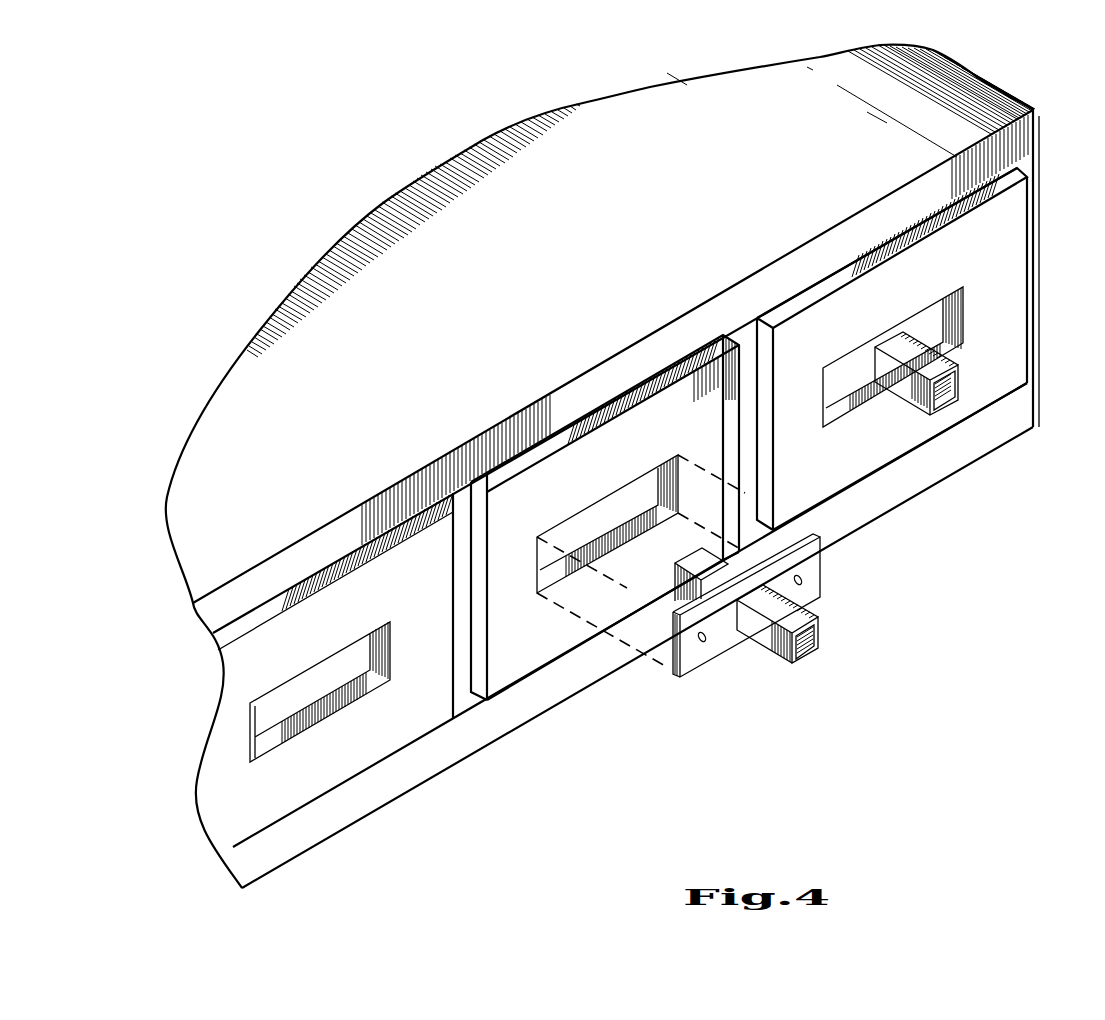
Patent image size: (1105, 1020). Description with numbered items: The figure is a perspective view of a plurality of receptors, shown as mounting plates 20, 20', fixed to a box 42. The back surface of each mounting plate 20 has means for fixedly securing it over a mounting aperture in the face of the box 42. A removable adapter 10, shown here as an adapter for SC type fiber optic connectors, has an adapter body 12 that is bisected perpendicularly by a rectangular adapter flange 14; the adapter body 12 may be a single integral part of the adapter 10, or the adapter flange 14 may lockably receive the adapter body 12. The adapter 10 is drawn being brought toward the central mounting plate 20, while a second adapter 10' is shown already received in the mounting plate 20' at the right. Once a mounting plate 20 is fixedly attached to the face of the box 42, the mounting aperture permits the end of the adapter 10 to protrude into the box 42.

The box 42 is at (690, 175).
The mounting plate 20 is at (608, 517).
The mounting plate 20' is at (892, 349).
The removable adapter 10 is at (787, 648).
The removable adapter 10' is at (983, 352).
The adapter flange 14 is at (815, 566).
The adapter body 12 is at (818, 612).